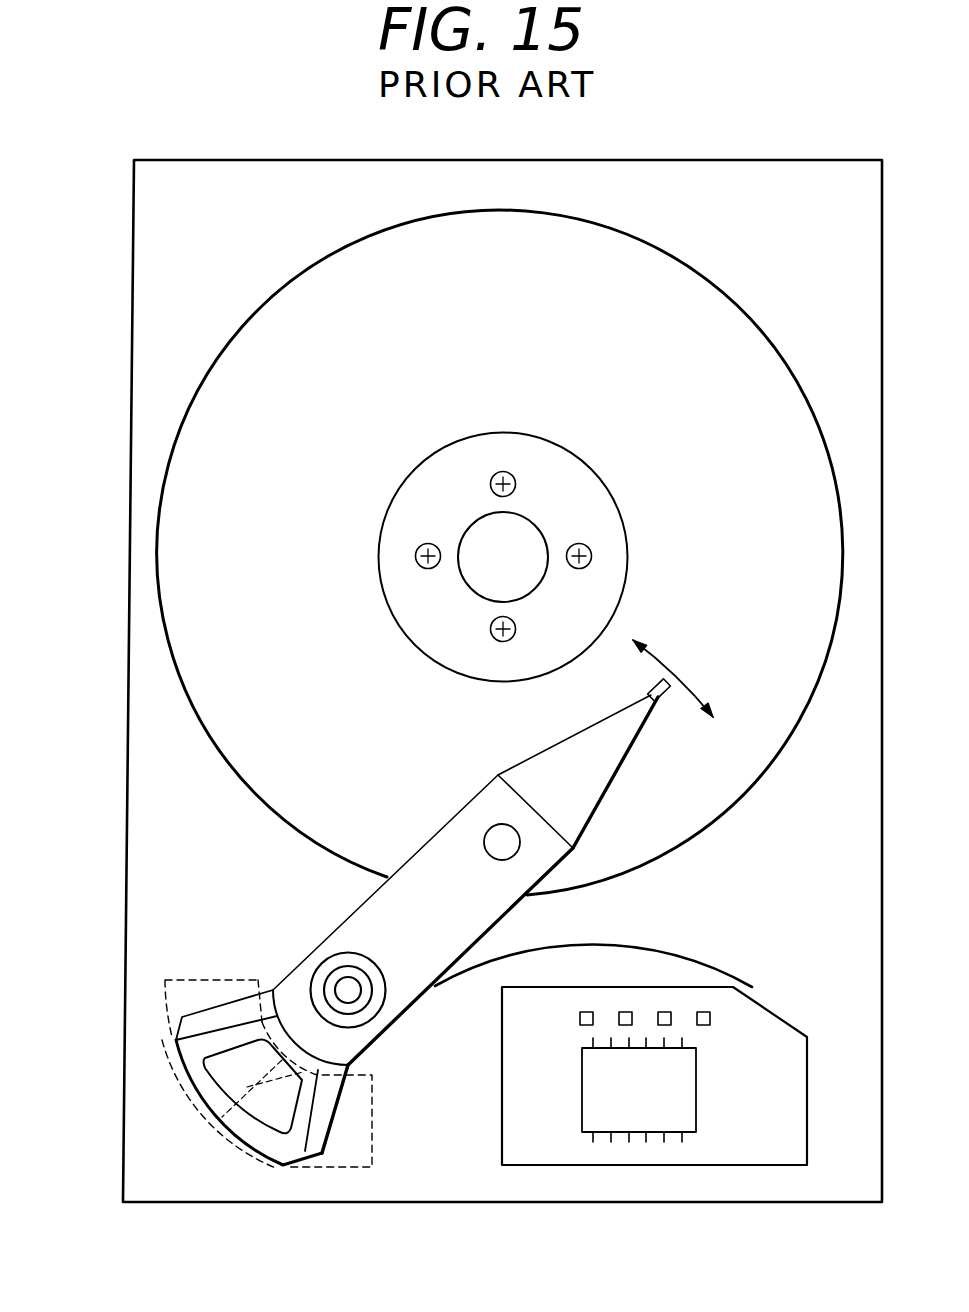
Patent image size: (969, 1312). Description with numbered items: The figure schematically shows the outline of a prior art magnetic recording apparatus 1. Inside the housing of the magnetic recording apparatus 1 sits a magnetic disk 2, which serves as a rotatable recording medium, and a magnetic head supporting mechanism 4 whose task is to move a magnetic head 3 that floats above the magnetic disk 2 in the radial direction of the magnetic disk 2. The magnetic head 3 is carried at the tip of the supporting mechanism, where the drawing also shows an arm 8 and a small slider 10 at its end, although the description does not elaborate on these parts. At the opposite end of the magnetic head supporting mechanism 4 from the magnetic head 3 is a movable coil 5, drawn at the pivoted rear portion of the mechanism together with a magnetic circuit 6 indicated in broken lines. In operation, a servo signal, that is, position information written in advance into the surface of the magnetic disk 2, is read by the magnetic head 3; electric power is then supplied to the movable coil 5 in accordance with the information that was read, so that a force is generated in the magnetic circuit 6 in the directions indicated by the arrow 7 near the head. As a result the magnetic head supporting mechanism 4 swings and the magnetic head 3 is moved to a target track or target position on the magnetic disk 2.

The magnetic recording apparatus 1 is at (105, 432).
The magnetic disk 2 is at (683, 295).
The magnetic head 3 is at (675, 722).
The magnetic head supporting mechanism 4 is at (422, 919).
The movable coil 5 is at (181, 1080).
The magnetic circuit 6 is at (355, 1122).
The arrow 7 is at (678, 675).
The arm 8 is at (568, 748).
The slider 10 is at (658, 683).